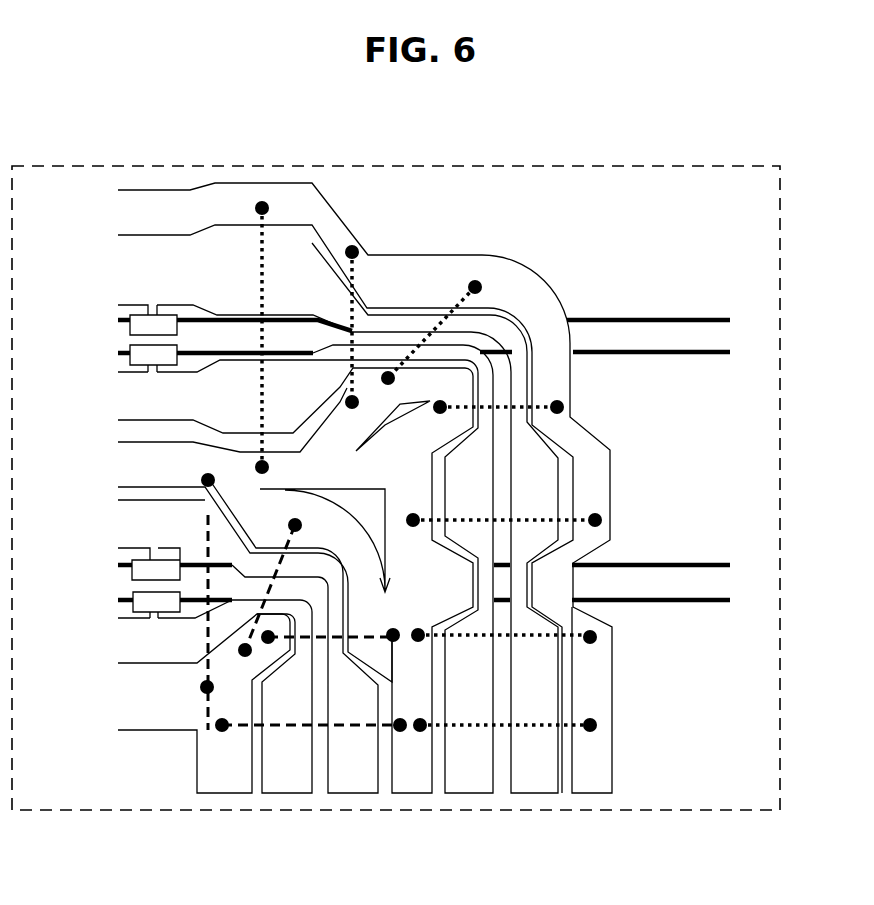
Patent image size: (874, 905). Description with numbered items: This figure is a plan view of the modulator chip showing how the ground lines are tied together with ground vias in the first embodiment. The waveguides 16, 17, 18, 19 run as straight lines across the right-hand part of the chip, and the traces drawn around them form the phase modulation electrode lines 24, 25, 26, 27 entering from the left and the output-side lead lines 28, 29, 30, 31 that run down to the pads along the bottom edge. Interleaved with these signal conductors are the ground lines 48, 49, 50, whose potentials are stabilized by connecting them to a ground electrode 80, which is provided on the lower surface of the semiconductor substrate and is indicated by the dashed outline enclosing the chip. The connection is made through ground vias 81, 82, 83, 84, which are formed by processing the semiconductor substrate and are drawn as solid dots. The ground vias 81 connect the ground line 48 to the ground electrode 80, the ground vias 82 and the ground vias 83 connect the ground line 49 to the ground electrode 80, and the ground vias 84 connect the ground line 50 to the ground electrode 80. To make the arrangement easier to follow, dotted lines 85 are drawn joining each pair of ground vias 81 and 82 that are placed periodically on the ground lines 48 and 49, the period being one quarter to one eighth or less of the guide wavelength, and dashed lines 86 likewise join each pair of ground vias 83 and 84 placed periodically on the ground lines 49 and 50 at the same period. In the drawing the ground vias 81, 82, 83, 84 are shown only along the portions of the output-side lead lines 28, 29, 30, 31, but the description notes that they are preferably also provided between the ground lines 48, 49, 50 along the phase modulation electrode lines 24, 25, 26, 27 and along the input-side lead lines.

The waveguide 16 is at (696, 316).
The waveguide 17 is at (700, 358).
The waveguide 18 is at (693, 565).
The waveguide 19 is at (700, 603).
The phase modulation electrode line 24 is at (133, 275).
The phase modulation electrode line 25 is at (168, 393).
The phase modulation electrode line 26 is at (140, 535).
The phase modulation electrode line 27 is at (140, 637).
The output-side lead line 28 is at (532, 783).
The output-side lead line 29 is at (457, 775).
The output-side lead line 30 is at (350, 782).
The output-side lead line 31 is at (280, 783).
The ground line 48 is at (590, 780).
The ground line 49 is at (405, 778).
The ground line 50 is at (222, 783).
The ground electrode 80 is at (783, 228).
The ground via 81 is at (556, 396).
The ground via 82 is at (255, 462).
The ground via 83 is at (290, 521).
The ground via 84 is at (217, 724).
The line 85 is at (535, 728).
The line 86 is at (205, 530).